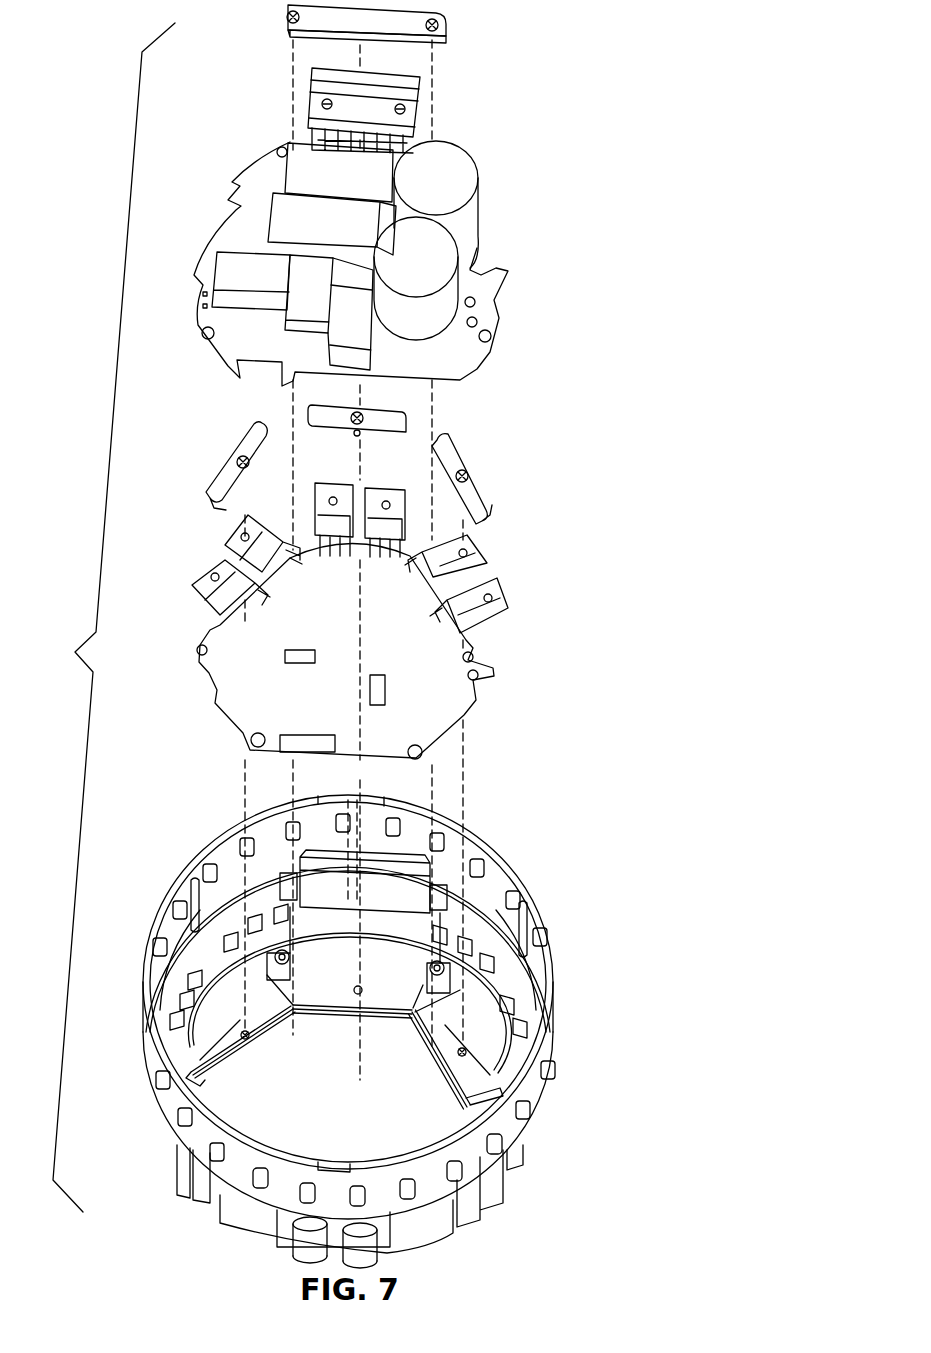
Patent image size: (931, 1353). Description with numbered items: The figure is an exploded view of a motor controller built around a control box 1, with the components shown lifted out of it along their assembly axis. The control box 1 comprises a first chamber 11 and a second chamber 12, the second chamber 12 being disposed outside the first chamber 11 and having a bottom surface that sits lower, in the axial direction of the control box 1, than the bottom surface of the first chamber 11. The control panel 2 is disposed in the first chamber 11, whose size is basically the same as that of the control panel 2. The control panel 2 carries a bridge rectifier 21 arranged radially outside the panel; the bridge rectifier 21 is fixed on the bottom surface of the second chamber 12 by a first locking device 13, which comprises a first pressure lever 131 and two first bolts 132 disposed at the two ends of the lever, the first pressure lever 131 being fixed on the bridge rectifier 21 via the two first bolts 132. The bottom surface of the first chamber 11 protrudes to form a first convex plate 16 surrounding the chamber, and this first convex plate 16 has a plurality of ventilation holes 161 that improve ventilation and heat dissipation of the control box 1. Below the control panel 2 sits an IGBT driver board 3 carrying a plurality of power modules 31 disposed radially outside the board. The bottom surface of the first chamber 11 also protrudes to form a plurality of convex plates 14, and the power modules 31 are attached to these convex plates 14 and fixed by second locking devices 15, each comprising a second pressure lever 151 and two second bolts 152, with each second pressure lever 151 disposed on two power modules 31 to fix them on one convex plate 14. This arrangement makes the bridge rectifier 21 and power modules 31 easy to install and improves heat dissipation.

The control box 1 is at (566, 1075).
The first chamber 11 is at (297, 1110).
The second chamber 12 is at (440, 880).
The first locking device 13 is at (458, 40).
The first pressure lever 131 is at (355, 19).
The first bolts 132 is at (285, 22).
The convex plates 14 is at (222, 1043).
The second locking devices 15 is at (492, 479).
The second pressure lever 151 is at (226, 488).
The second bolts 152 is at (238, 460).
The first convex plate 16 is at (498, 942).
The ventilation holes 161 is at (514, 1002).
The control panel 2 is at (228, 230).
The bridge rectifier 21 is at (322, 96).
The IGBT driver board 3 is at (255, 690).
The power modules 31 is at (230, 590).